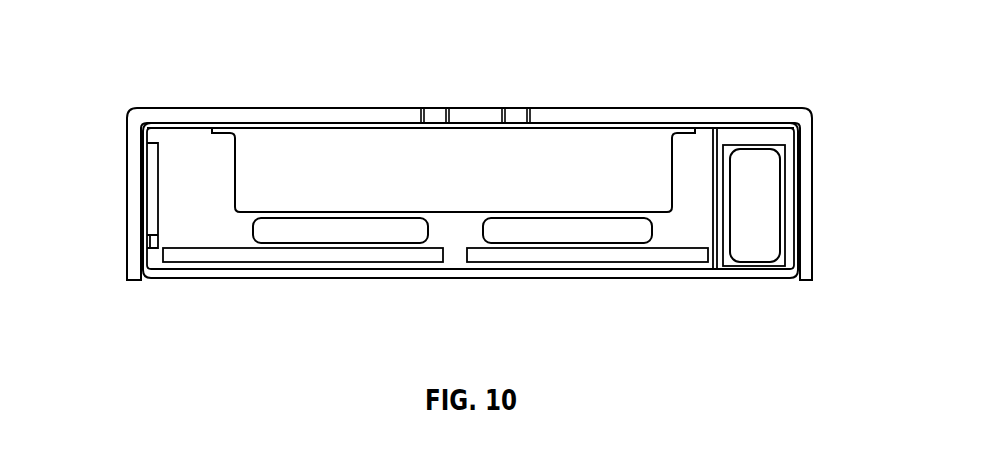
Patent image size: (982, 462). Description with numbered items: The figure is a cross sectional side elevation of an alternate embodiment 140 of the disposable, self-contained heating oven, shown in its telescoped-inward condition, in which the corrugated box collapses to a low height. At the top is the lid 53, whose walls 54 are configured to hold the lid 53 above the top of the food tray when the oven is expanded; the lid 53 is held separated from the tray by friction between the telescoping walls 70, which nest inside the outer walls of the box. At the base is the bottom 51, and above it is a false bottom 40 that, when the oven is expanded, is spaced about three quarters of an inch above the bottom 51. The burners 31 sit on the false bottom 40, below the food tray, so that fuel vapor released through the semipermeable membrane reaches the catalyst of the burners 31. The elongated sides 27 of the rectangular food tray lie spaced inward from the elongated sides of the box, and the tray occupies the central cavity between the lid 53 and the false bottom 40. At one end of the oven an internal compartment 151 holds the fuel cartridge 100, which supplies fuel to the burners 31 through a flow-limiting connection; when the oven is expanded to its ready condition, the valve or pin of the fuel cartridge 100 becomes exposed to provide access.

The alternate embodiment 140 is at (639, 100).
The lid 53 is at (605, 108).
The walls of the lid 54 is at (813, 167).
The bottom 51 is at (537, 282).
The elongated sides of the food tray 27 is at (233, 169).
The telescoping walls 70 is at (137, 183).
The burners 31 is at (627, 230).
The false bottom 40 is at (693, 253).
The internal compartment 151 is at (745, 130).
The fuel cartridge 100 is at (758, 250).